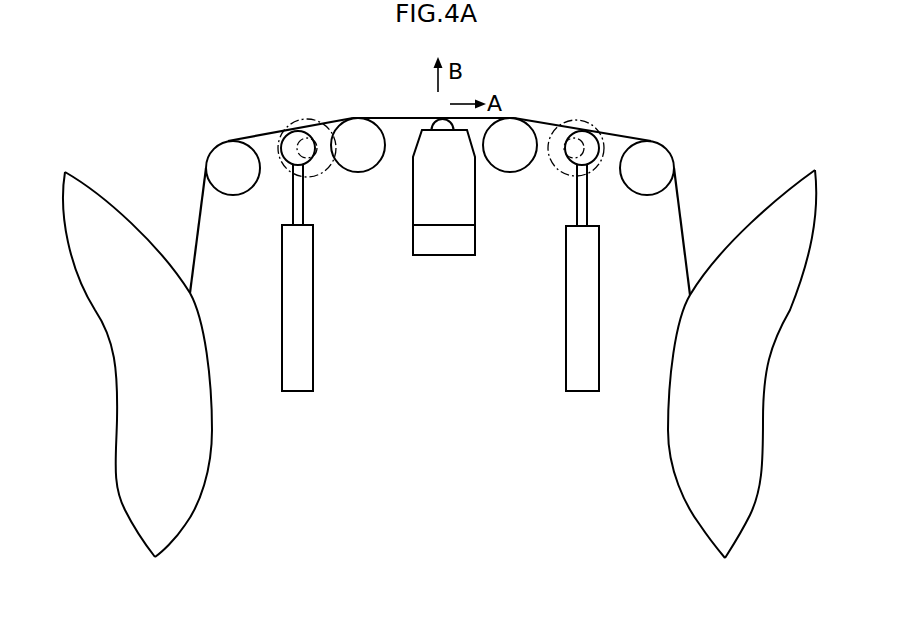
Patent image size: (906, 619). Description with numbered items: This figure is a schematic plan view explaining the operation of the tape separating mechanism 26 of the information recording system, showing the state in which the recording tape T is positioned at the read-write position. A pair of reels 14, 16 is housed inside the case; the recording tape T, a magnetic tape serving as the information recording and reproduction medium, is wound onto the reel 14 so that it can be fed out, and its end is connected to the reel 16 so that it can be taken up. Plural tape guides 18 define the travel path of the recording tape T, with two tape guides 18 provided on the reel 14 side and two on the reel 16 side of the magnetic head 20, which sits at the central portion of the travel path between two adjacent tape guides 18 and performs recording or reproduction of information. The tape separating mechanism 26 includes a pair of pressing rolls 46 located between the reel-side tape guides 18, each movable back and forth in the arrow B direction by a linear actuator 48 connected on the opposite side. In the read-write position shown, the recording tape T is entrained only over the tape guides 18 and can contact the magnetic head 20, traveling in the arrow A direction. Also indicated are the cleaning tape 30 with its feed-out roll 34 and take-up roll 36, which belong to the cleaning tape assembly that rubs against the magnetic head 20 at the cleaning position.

The reel 14 is at (122, 190).
The reel 16 is at (786, 178).
The tape guide 18 is at (230, 183).
The magnetic head 20 is at (463, 212).
The tape separating mechanism 26 is at (442, 247).
The cleaning tape 30 is at (535, 117).
The feed-out roll 34 is at (300, 120).
The take-up roll 36 is at (585, 123).
The pressing roll 46 is at (288, 145).
The linear actuator 48 is at (303, 323).
The recording tape T is at (683, 220).